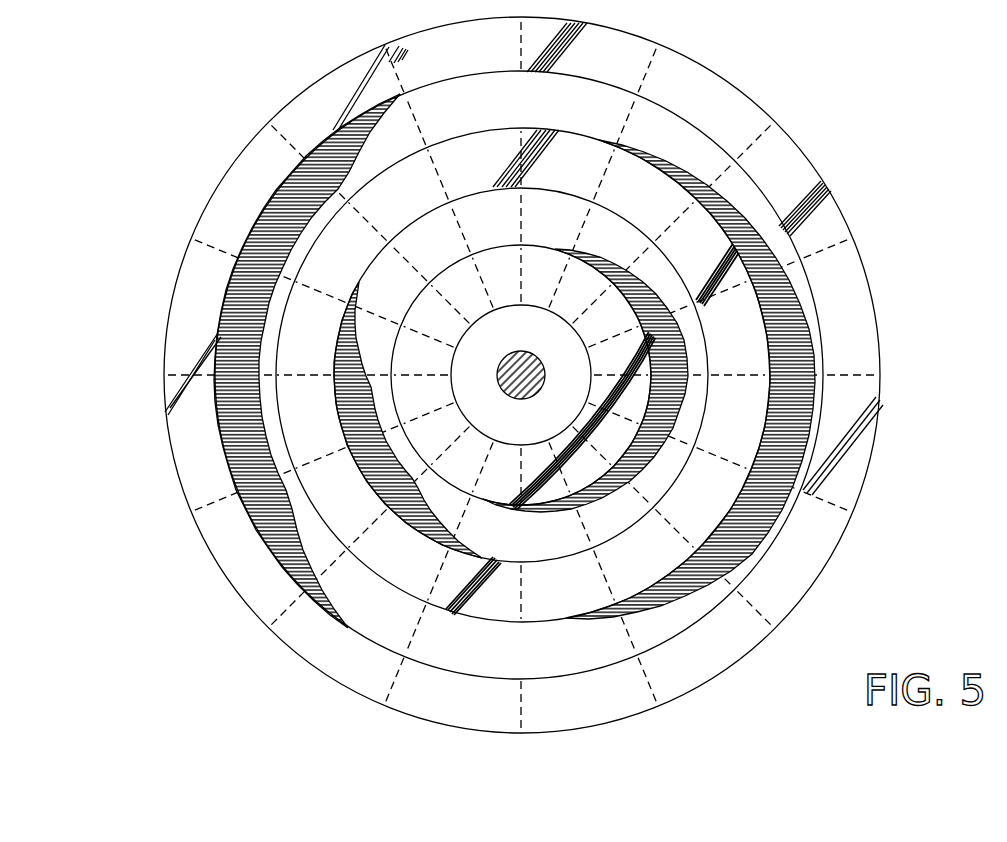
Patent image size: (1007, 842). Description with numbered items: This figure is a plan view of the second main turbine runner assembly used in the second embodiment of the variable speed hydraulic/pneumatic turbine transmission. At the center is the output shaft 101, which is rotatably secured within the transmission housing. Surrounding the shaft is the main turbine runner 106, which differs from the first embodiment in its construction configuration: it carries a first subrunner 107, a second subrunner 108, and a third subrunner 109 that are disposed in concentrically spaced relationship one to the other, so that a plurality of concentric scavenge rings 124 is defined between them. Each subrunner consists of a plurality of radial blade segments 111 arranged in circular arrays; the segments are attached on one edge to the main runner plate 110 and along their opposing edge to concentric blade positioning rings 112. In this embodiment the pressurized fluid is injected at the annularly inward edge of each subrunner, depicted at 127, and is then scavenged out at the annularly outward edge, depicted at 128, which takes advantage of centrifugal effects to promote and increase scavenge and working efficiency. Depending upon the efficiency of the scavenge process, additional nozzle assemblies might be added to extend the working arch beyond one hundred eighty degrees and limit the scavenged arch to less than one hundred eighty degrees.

The output shaft 101 is at (518, 357).
The main turbine runner 106 is at (842, 76).
The first subrunner 107 is at (834, 198).
The second subrunner 108 is at (747, 333).
The third subrunner 109 is at (641, 376).
The main runner plate 110 is at (500, 120).
The radial blade segments 111 is at (463, 500).
The concentric blade positioning rings 112 is at (578, 71).
The concentric scavenge rings 124 is at (500, 431).
The annularly inward edge of each subrunner 127 is at (449, 82).
The annularly outward edge of each subrunner 128 is at (604, 24).